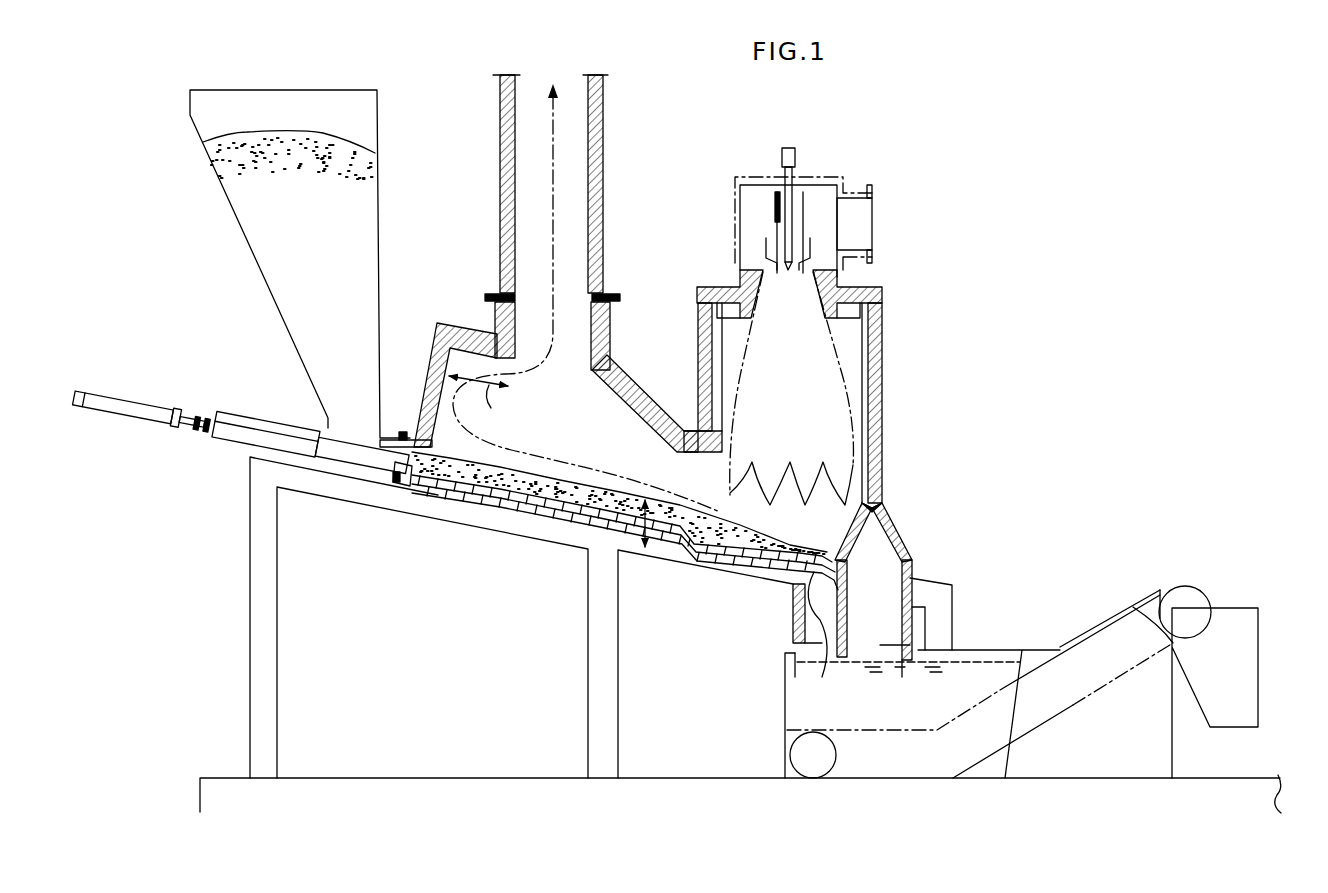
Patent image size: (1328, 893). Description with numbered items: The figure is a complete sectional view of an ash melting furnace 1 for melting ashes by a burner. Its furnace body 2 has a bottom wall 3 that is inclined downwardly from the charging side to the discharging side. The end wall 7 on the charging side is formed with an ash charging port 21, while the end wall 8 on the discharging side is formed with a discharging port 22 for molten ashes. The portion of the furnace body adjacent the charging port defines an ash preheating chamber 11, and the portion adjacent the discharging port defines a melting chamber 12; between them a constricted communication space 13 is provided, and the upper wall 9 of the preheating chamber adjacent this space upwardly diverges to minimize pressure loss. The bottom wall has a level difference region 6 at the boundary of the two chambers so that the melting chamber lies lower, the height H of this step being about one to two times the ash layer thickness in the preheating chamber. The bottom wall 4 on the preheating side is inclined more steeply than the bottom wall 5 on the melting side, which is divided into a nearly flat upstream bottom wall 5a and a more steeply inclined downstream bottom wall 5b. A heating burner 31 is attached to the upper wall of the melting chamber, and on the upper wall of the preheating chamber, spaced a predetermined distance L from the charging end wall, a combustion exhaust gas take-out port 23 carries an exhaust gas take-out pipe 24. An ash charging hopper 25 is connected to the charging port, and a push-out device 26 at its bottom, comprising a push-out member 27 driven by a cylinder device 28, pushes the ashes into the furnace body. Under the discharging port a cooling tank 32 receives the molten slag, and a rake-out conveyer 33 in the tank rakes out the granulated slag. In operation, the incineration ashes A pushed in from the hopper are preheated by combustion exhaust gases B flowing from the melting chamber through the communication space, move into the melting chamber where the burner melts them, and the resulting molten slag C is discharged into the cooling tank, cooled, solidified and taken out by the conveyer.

The ash melting furnace 1 is at (895, 151).
The furnace body 2 is at (888, 352).
The bottom wall 3 is at (530, 513).
The bottom wall on the preheating side 4 is at (472, 498).
The bottom wall on the melting side 5 is at (758, 565).
The upstream bottom wall 5a is at (720, 553).
The downstream bottom wall 5b is at (817, 641).
The level difference region 6 is at (673, 537).
The end wall on the charging side 7 is at (416, 382).
The end wall on the discharging side 8 is at (880, 503).
The upper wall 9 is at (630, 372).
The ash preheating chamber 11 is at (557, 441).
The melting chamber 12 is at (835, 534).
The communication space 13 is at (712, 487).
The ash charging port 21 is at (390, 470).
The discharging port 22 is at (853, 537).
The combustion exhaust gas take-out port 23 is at (590, 346).
The exhaust gas take-out pipe 24 is at (608, 205).
The ash charging hopper 25 is at (243, 237).
The push-out device 26 is at (207, 451).
The push-out member 27 is at (348, 447).
The cylinder device 28 is at (130, 420).
The heating burner 31 is at (818, 221).
The cooling tank 32 is at (971, 650).
The rake-out conveyer 33 is at (1186, 640).
The incineration ashes A is at (353, 247).
The combustion exhaust gases B is at (585, 447).
The molten slag C is at (847, 600).
The height of the level difference region H is at (620, 530).
The predetermined distance L is at (479, 400).